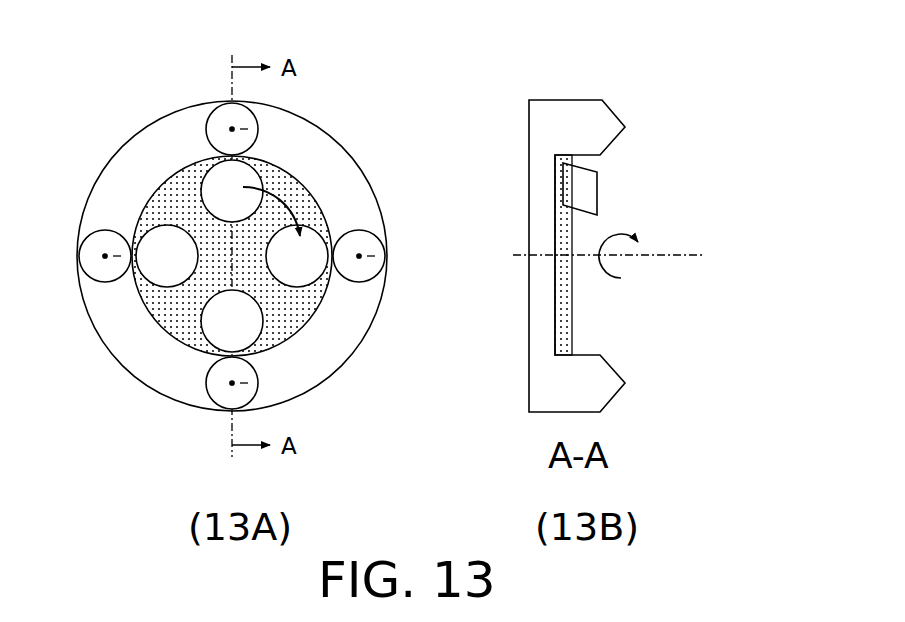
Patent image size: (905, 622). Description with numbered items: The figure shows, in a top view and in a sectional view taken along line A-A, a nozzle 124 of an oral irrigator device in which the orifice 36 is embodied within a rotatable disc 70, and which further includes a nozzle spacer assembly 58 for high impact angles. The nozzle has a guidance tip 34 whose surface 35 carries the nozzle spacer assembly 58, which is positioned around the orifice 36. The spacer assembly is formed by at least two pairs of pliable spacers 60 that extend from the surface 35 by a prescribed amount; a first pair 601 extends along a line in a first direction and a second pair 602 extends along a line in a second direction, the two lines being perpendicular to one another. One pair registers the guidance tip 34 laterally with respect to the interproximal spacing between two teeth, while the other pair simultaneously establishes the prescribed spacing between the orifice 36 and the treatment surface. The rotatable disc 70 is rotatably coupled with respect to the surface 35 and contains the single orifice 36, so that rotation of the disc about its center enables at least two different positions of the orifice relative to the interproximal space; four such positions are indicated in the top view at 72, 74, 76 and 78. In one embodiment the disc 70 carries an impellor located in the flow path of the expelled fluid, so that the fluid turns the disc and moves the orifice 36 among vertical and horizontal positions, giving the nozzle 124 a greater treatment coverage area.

The nozzle 124 is at (377, 70).
The guidance tip 34 is at (350, 173).
The surface 35 is at (155, 357).
The orifice 36 is at (585, 192).
The nozzle spacer assembly 58 is at (149, 90).
The pliable spacers 60 is at (225, 98).
The first pair of pliable spacers 601 is at (248, 108).
The second pair of pliable spacers 602 is at (408, 302).
The rotatable disc 70 is at (288, 315).
The first orifice position 72 is at (246, 203).
The second orifice position 74 is at (311, 269).
The third orifice position 76 is at (246, 334).
The fourth orifice position 78 is at (181, 269).